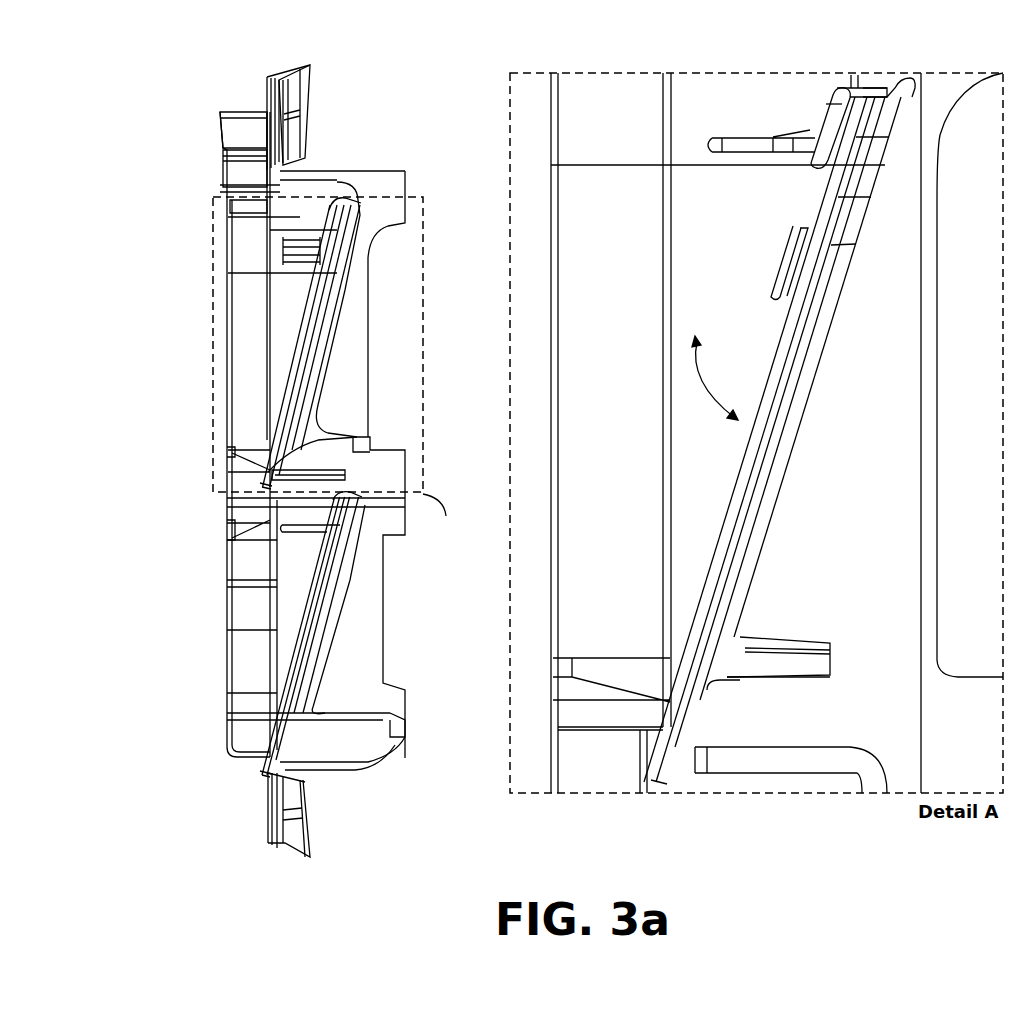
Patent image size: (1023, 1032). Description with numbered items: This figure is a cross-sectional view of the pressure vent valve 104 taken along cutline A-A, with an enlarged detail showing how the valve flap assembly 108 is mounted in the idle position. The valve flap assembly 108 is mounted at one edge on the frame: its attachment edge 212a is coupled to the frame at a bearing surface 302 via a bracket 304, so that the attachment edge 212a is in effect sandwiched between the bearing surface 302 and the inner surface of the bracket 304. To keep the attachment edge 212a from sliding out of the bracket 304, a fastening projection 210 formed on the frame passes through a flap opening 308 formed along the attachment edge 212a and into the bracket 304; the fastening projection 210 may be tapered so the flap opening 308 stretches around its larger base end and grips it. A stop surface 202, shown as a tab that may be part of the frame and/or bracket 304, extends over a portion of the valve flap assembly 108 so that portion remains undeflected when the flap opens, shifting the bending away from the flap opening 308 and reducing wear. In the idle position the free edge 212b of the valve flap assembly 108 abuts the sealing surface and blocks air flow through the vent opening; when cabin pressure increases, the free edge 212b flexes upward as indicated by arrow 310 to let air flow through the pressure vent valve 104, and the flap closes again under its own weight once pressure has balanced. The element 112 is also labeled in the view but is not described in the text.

The pressure vent valve 104 is at (216, 64).
The side panel 112 is at (282, 79).
The valve flap assembly 108 is at (790, 332).
The stop surface 202 is at (790, 232).
The fastening projection 210 is at (740, 137).
The attachment edge 212a is at (868, 91).
The free edge 212b is at (678, 784).
The bearing surface 302 is at (892, 105).
The bracket 304 is at (825, 108).
The flap opening 308 is at (847, 127).
The arrow 310 is at (710, 363).